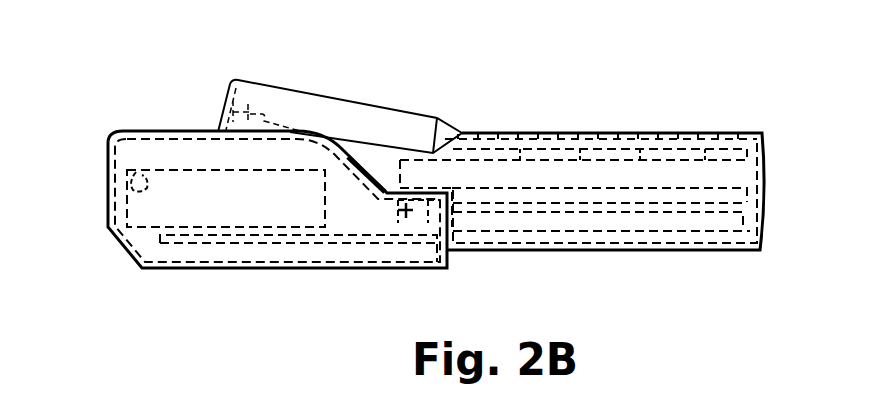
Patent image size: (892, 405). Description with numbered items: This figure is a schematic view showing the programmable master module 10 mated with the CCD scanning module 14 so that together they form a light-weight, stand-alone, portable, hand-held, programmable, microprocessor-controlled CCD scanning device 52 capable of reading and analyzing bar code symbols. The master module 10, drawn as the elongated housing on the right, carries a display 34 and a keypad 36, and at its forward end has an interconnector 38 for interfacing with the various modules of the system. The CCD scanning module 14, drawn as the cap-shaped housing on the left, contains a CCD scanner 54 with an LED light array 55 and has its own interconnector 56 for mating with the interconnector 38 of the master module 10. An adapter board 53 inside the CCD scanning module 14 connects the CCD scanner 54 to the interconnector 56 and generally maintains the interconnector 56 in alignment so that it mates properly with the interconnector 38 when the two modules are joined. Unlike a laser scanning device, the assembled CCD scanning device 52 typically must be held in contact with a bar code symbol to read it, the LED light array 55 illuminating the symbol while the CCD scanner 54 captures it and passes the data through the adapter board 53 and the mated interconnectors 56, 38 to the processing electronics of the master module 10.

The master module 10 is at (764, 132).
The CCD scanning module 14 is at (109, 152).
The display 34 is at (387, 103).
The keypad 36 is at (583, 131).
The interconnector 38 is at (353, 179).
The CCD scanning device 52 is at (614, 86).
The adapter board 53 is at (273, 243).
The CCD scanner 54 is at (230, 212).
The LED light array 55 is at (140, 181).
The interconnector 56 is at (398, 221).